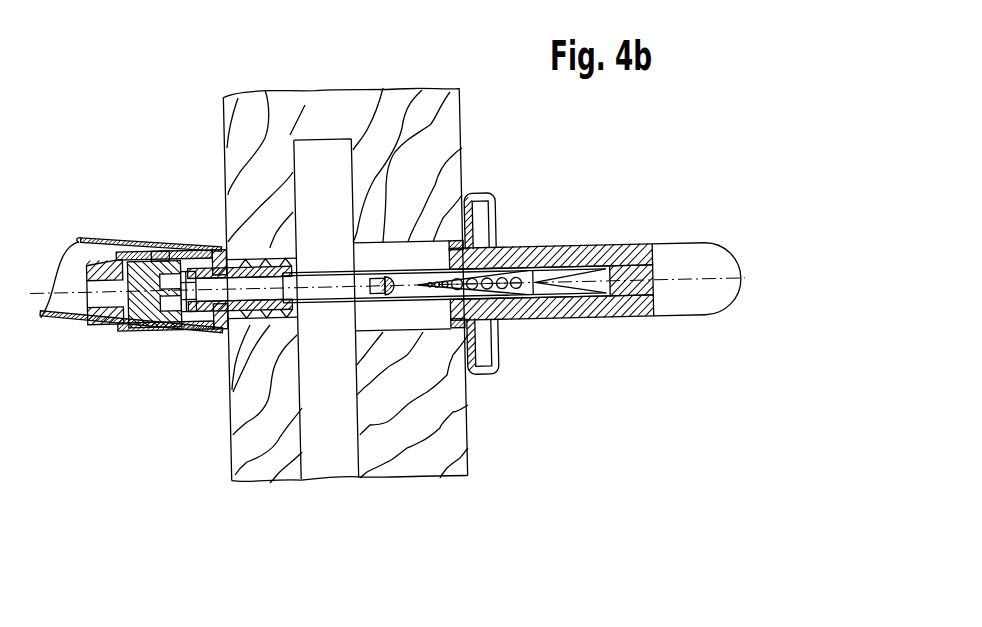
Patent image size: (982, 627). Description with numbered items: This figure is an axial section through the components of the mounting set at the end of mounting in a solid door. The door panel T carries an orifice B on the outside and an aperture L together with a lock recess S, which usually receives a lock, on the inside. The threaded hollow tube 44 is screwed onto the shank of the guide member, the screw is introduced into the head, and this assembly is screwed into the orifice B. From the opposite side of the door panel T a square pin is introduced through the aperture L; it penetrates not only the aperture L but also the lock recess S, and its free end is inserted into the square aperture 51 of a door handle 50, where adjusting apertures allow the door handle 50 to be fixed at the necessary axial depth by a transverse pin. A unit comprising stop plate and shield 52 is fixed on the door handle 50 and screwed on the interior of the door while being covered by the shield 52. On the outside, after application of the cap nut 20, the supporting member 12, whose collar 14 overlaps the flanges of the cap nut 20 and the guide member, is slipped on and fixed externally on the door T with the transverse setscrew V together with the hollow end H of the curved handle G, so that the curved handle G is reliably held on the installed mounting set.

The aperture L is at (407, 250).
The door panel T is at (273, 488).
The lock recess S is at (337, 447).
The orifice B is at (292, 250).
The curved handle G is at (70, 256).
The hollow end H is at (72, 322).
The transverse setscrew V is at (153, 250).
The collar 14 is at (215, 250).
The supporting member 12 is at (117, 325).
The cap nut 20 is at (158, 300).
The threaded hollow tube 44 is at (262, 322).
The square aperture 51 is at (562, 293).
The door handle 50 is at (686, 242).
The shield 52 is at (507, 193).